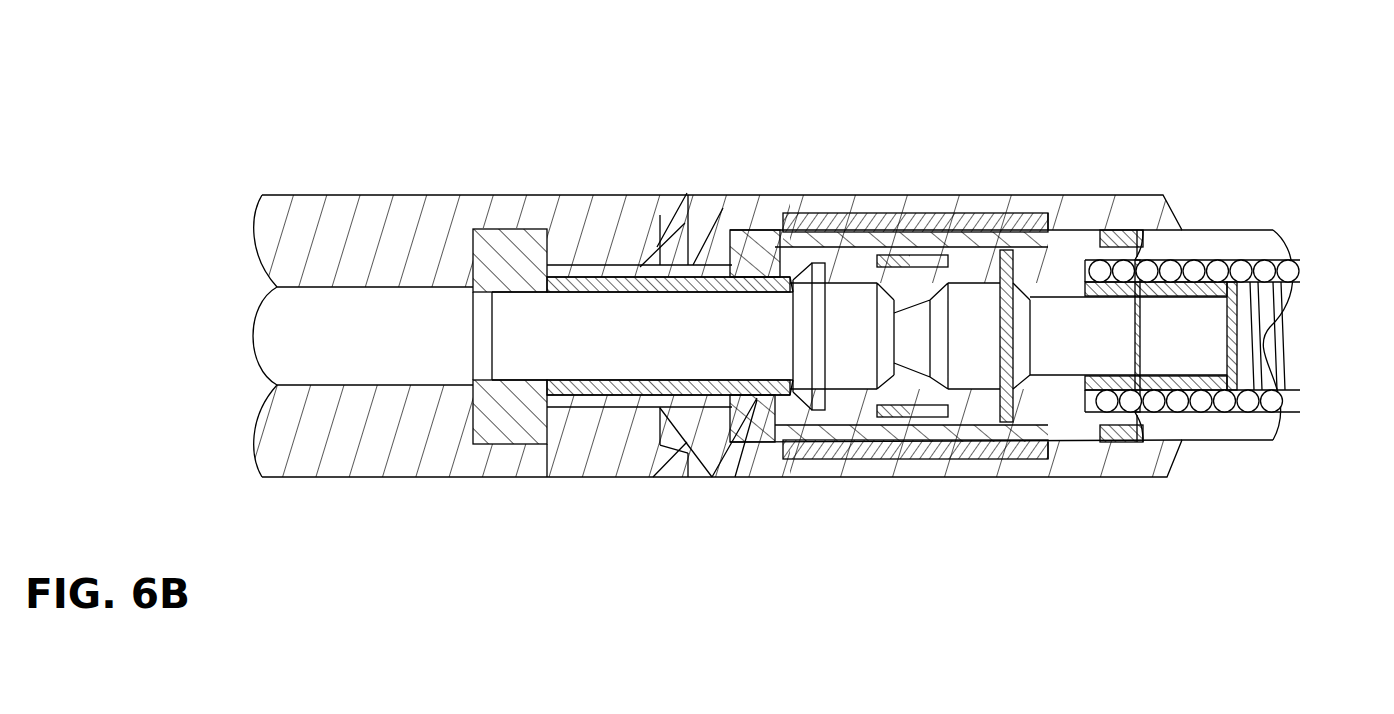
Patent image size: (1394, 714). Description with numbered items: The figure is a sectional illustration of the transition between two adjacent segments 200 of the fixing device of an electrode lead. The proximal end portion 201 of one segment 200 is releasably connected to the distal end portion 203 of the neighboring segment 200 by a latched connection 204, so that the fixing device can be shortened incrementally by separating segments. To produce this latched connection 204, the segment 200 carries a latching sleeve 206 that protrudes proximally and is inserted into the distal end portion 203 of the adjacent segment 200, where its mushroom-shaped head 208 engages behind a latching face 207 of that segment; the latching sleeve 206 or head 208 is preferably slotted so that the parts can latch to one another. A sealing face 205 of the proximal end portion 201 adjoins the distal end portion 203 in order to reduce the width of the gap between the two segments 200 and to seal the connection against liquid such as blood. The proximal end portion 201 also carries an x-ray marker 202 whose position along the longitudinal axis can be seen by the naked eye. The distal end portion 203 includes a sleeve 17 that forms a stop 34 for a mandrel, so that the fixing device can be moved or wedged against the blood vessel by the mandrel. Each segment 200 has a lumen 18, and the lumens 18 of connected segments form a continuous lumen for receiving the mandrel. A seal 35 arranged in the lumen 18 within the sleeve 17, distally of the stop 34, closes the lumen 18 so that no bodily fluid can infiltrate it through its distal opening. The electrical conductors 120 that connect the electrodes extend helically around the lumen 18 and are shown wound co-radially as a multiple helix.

The segment 200 is at (555, 185).
The proximal end portion 201 is at (529, 215).
The latched connection 204 is at (580, 280).
The sealing face 205 is at (723, 212).
The sleeve 17 is at (892, 242).
The x-ray marker 202 is at (925, 223).
The seal 35 is at (965, 263).
The distal end portion 203 is at (1040, 208).
The stop 34 is at (1140, 222).
The lumen 18 is at (1247, 333).
The electrical conductor 120 is at (1277, 402).
The latching sleeve 206 is at (605, 387).
The latching face 207 is at (753, 428).
The mushroom-shaped head 208 is at (803, 413).